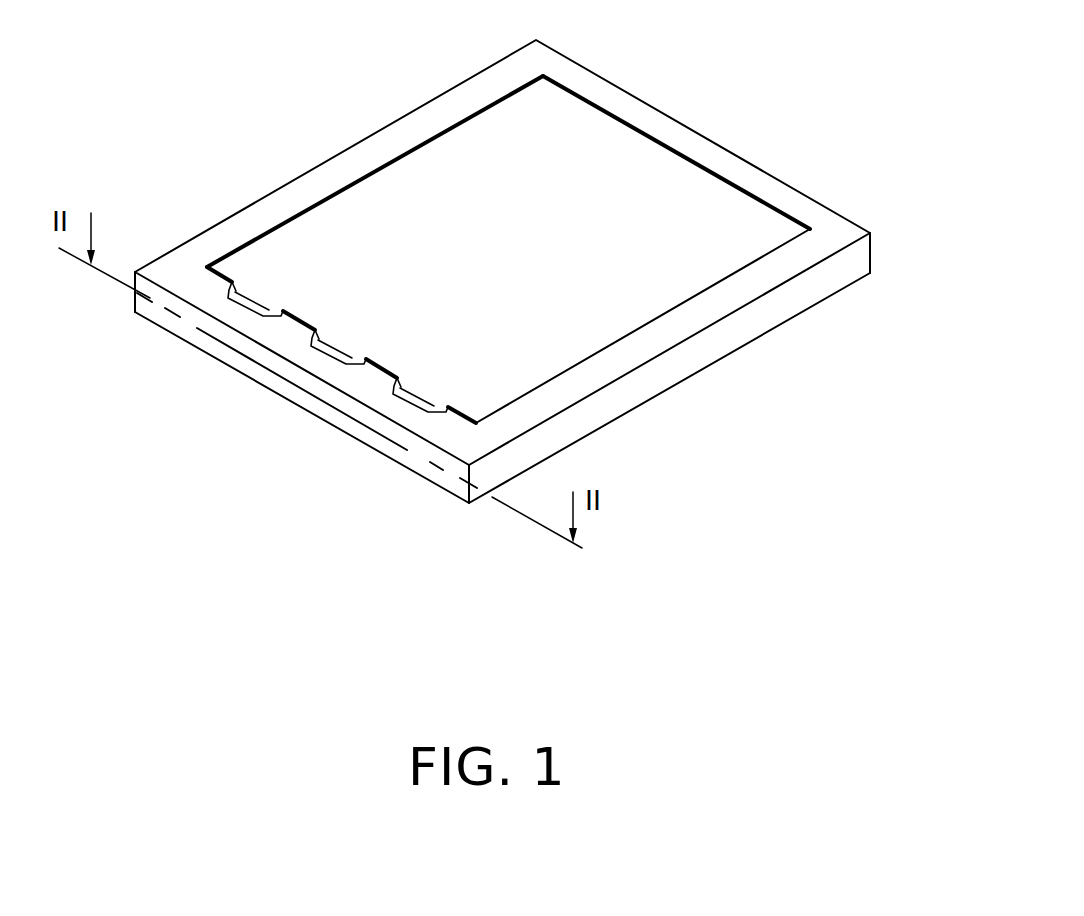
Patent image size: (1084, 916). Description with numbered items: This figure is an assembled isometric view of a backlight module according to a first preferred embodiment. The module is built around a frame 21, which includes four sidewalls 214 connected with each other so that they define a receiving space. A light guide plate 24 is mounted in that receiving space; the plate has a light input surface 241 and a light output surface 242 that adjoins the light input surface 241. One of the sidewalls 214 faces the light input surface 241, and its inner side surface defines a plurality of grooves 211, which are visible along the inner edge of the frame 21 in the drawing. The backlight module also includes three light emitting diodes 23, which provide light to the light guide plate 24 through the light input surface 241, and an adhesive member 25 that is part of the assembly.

The frame 21 is at (871, 134).
The grooves 211 is at (392, 385).
The sidewall 214 is at (775, 197).
The light emitting diode 23 is at (258, 311).
The light guide plate 24 is at (323, 73).
The light input surface 241 is at (311, 310).
The light output surface 242 is at (404, 200).
The adhesive member 25 is at (248, 293).